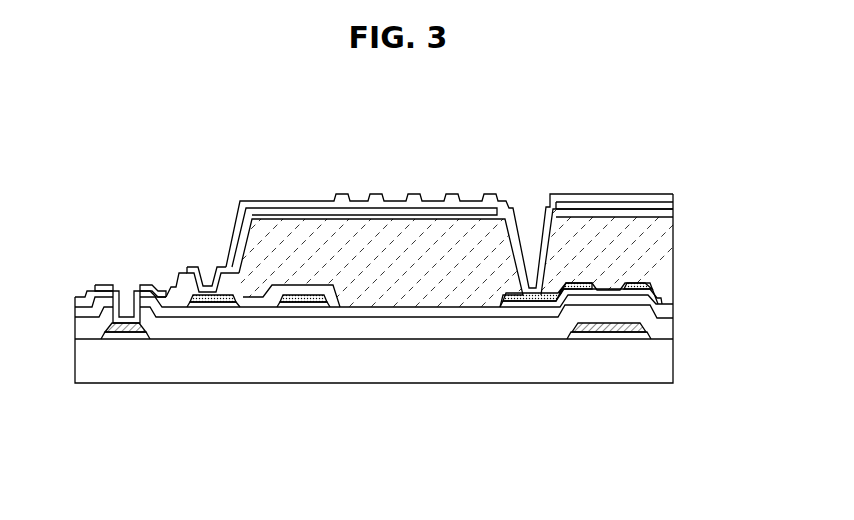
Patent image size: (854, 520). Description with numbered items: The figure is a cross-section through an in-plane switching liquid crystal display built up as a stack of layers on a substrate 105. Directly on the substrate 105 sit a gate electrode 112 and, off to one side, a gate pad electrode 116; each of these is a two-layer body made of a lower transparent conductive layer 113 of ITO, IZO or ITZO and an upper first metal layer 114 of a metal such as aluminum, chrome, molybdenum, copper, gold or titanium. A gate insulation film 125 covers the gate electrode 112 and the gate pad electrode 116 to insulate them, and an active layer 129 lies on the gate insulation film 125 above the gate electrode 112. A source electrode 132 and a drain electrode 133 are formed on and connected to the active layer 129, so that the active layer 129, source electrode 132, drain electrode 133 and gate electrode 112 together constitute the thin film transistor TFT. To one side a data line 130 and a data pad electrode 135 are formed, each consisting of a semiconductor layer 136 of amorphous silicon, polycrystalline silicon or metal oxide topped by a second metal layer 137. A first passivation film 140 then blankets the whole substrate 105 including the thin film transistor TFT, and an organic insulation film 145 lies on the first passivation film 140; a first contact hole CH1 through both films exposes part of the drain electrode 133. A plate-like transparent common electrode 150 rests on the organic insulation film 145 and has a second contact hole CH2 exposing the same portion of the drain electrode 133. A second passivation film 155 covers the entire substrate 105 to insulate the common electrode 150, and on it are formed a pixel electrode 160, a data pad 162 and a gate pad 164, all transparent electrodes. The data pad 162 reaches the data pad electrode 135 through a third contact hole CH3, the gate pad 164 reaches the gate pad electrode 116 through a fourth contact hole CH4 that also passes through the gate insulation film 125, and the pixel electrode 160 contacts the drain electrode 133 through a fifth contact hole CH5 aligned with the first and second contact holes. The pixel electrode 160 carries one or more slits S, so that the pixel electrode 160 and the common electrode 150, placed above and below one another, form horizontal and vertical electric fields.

The substrate 105 is at (664, 362).
The gate insulation film 125 is at (664, 329).
The first passivation film 140 is at (664, 310).
The organic insulation film 145 is at (664, 259).
The common electrode 150 is at (666, 212).
The second passivation film 155 is at (666, 202).
The pixel electrode 160 is at (641, 193).
The data pad 162 is at (190, 267).
The gate pad 164 is at (116, 285).
The gate electrode 112 is at (635, 427).
The gate pad electrode 116 is at (368, 390).
The transparent conductive layer 113 is at (135, 334).
The first metal layer 114 is at (116, 330).
The active layer 129 is at (553, 312).
The data line 130 is at (325, 427).
The source electrode 132 is at (654, 354).
The drain electrode 133 is at (518, 308).
The data pad electrode 135 is at (256, 376).
The semiconductor layer 136 is at (195, 310).
The second metal layer 137 is at (225, 300).
The first contact hole CH1 is at (556, 236).
The second contact hole CH2 is at (543, 286).
The third contact hole CH3 is at (213, 290).
The fourth contact hole CH4 is at (115, 312).
The fifth contact hole CH5 is at (548, 226).
The slit S is at (352, 190).
The thin film transistor TFT is at (590, 390).